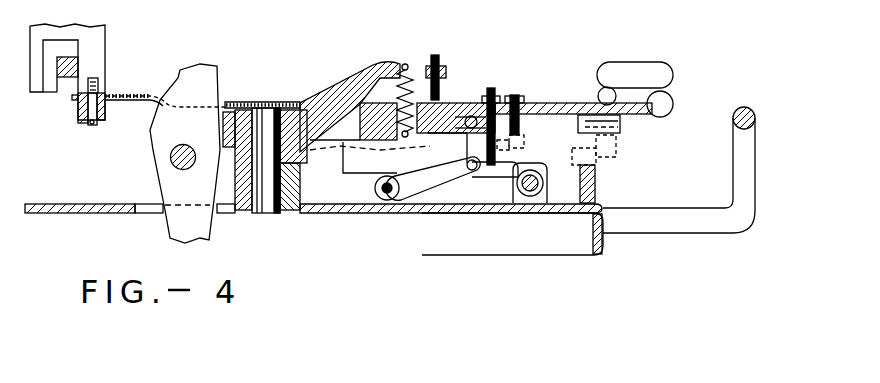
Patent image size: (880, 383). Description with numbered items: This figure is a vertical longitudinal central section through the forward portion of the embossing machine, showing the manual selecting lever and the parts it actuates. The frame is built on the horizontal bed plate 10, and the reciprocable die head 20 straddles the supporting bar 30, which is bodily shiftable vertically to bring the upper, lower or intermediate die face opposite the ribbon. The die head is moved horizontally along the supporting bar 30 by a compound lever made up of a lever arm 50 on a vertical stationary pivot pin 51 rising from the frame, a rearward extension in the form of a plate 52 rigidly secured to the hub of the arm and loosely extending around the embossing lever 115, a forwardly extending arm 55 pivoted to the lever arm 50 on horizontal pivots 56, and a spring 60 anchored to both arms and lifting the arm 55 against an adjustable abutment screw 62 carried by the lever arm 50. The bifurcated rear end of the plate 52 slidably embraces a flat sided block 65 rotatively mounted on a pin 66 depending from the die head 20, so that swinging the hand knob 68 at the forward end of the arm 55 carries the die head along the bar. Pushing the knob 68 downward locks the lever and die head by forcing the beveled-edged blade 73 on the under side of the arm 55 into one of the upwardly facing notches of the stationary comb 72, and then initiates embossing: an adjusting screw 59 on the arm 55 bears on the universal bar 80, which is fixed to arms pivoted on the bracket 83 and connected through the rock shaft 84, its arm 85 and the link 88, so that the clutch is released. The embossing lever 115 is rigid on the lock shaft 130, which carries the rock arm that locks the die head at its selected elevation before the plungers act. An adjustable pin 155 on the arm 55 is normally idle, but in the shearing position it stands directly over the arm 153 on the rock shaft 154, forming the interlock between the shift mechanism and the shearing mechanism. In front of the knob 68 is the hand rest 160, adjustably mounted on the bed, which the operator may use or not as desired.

The bed plate 10 is at (90, 204).
The die head 20 is at (95, 42).
The supporting bar 30 is at (67, 78).
The lever arm 50 is at (343, 83).
The vertical stationary pivot pin 51 is at (268, 107).
The plate 52 is at (145, 96).
The forwardly extending arm 55 is at (557, 105).
The horizontal pivots 56 is at (307, 106).
The adjusting screw 59 is at (514, 94).
The spring 60 is at (417, 50).
The adjustable abutment screw 62 is at (440, 88).
The flat sided block 65 is at (105, 108).
The pin 66 is at (88, 122).
The hand knob 68 is at (663, 73).
The stationary comb 72 is at (597, 180).
The beveled-edged blade 73 is at (617, 137).
The universal bar 80 is at (525, 142).
The bracket 83 is at (233, 108).
The rock shaft 84 is at (392, 203).
The arm 85 is at (433, 179).
The link 88 is at (473, 145).
The embossing lever 115 is at (197, 85).
The lock shaft 130 is at (183, 169).
The arm 153 is at (488, 168).
The rock shaft 154 is at (533, 197).
The adjustable pin 155 is at (497, 157).
The hand rest 160 is at (740, 165).